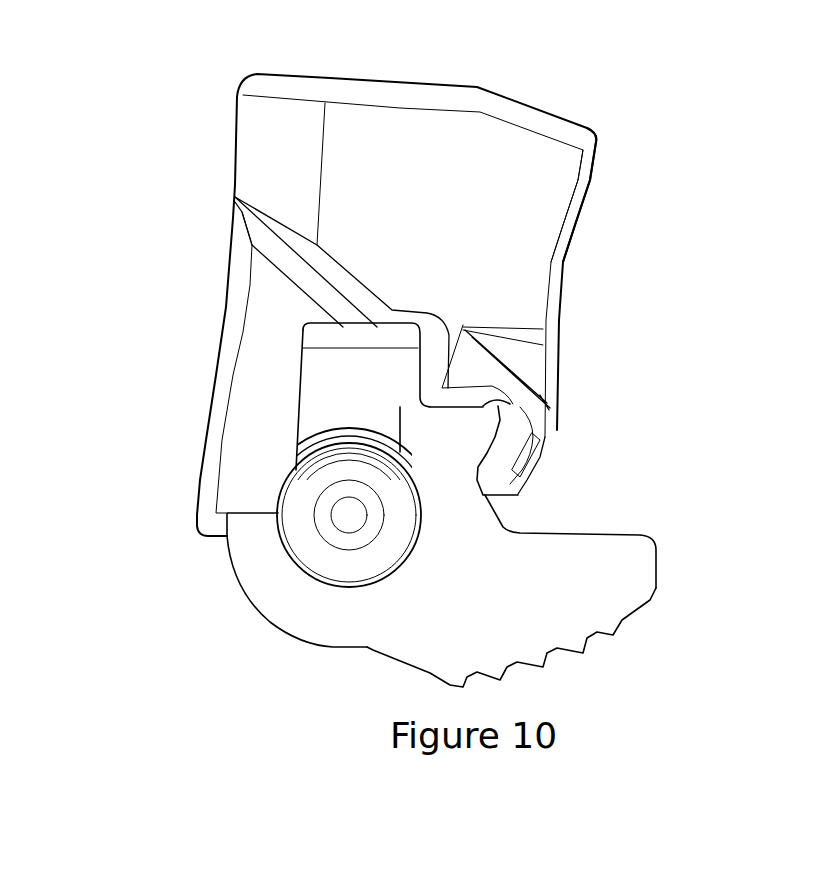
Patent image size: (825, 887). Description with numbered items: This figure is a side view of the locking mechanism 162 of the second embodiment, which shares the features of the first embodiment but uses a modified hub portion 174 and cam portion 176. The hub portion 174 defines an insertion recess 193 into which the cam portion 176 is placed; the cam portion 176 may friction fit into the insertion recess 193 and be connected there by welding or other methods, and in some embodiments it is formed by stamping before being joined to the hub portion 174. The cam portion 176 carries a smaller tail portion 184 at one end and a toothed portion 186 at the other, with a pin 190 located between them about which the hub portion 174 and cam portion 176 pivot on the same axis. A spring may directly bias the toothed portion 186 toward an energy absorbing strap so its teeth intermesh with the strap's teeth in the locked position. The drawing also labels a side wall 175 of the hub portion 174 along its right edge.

The locking mechanism 162 is at (725, 160).
The hub portion 174 is at (362, 132).
The side wall 175 is at (592, 178).
The insertion recess 193 is at (505, 408).
The pin 190 is at (347, 513).
The tail portion 184 is at (237, 542).
The cam portion 176 is at (603, 553).
The toothed portion 186 is at (620, 605).